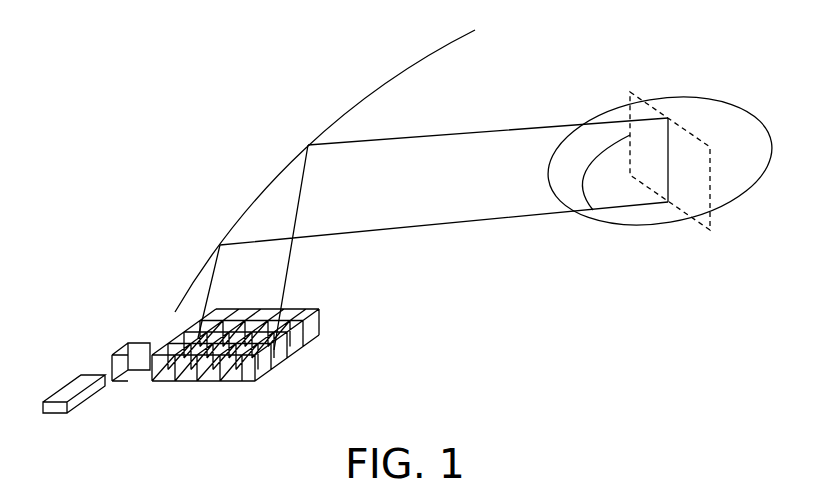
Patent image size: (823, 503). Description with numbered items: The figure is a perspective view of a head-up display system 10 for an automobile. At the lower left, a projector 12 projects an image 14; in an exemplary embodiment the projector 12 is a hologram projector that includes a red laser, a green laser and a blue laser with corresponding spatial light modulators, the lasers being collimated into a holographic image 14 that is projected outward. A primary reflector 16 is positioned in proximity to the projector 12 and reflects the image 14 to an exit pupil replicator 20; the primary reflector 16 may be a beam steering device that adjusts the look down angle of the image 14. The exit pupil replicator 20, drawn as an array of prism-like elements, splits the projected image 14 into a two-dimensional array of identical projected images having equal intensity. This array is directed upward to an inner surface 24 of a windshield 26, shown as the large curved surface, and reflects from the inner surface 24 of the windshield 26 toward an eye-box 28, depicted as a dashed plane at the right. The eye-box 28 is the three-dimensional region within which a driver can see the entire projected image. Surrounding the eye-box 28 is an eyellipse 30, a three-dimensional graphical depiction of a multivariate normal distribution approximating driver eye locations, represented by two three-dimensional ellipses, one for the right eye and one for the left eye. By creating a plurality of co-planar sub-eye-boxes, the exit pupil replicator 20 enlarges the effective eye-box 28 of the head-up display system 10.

The head-up display system 10 is at (530, 372).
The projector 12 is at (74, 384).
The image 14 is at (472, 153).
The primary reflector 16 is at (133, 342).
The exit pupil replicator 20 is at (313, 365).
The inner surface 24 is at (407, 68).
The windshield 26 is at (372, 62).
The eye-box 28 is at (710, 212).
The eyellipse 30 is at (687, 100).